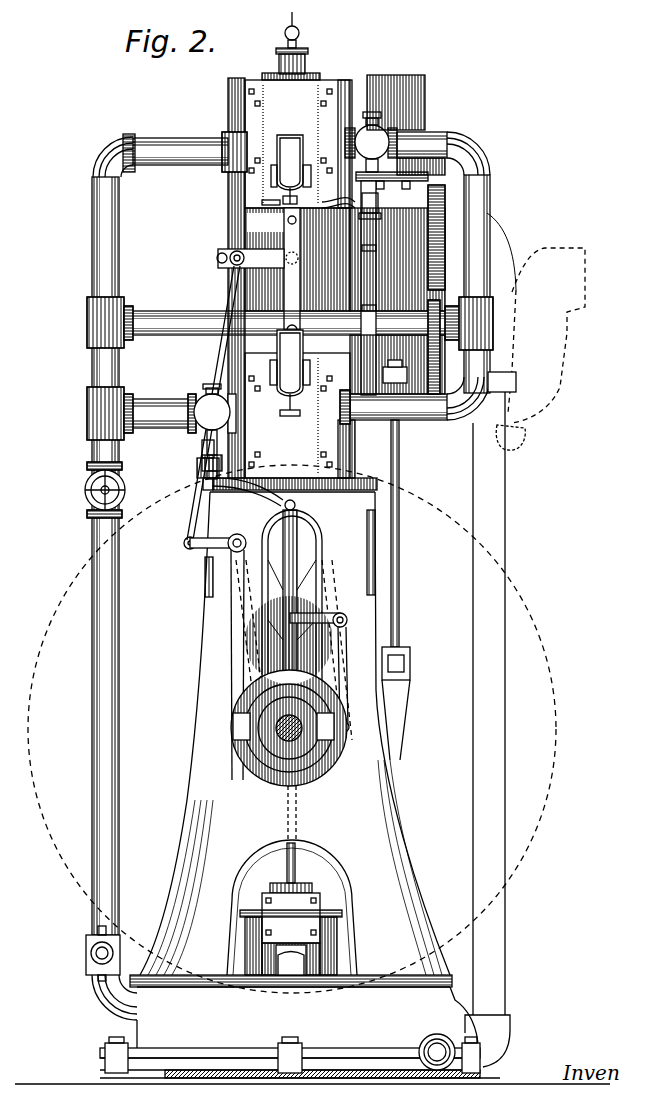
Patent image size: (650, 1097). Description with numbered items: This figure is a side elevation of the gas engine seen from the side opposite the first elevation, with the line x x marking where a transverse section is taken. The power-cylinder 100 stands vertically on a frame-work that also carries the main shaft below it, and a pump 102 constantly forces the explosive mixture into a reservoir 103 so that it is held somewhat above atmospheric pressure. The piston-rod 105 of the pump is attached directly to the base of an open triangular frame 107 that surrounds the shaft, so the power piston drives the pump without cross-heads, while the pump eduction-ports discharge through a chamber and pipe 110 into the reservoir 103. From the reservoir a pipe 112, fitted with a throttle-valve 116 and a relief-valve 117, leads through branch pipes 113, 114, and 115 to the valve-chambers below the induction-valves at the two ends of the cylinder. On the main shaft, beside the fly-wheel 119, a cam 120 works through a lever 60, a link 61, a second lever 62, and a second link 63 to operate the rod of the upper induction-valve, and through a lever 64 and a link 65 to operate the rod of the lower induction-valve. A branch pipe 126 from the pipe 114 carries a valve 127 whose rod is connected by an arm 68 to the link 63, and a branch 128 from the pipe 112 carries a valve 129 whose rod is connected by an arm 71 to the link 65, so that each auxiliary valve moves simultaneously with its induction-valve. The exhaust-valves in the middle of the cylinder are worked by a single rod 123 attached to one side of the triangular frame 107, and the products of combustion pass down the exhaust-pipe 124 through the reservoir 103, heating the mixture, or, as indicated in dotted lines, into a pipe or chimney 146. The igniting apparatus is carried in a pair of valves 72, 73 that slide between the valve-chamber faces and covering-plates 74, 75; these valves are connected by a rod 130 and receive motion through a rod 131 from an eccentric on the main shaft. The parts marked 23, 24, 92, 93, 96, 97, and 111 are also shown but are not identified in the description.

The cylinder 23 is at (436, 222).
The cylinder head 24 is at (440, 342).
The lever 60 is at (238, 597).
The link 61 is at (210, 350).
The second lever 62 is at (250, 258).
The second link 63 is at (282, 227).
The lever 64 is at (343, 697).
The link 65 is at (302, 569).
The arm 68 is at (345, 205).
The arm 71 is at (257, 494).
The valve 72 is at (291, 80).
The valve 73 is at (308, 481).
The covering-plate 74 is at (298, 144).
The covering-plate 75 is at (318, 416).
The upper valve 92 is at (291, 169).
The lower valve 93 is at (290, 373).
The valve stem pin 96 is at (268, 201).
The lower valve casing 97 is at (297, 415).
The power-cylinder 100 is at (228, 218).
The pump 102 is at (245, 950).
The reservoir 103 is at (300, 785).
The piston-rod of the pump 105 is at (296, 863).
The open triangular frame 107 is at (226, 643).
The chamber and pipe 110 is at (291, 913).
The pump plunger 111 is at (291, 959).
The pipe 112 is at (118, 673).
The branch pipe 113 is at (172, 146).
The branch pipe 114 is at (171, 317).
The branch pipe 115 is at (436, 418).
The throttle-valve 116 is at (85, 489).
The relief-valve 117 is at (87, 953).
The fly-wheel 119 is at (298, 729).
The cam 120 is at (318, 784).
The rod 123 is at (398, 540).
The exhaust-pipe 124 is at (490, 719).
The branch pipe 126 is at (489, 212).
The valve 127 is at (386, 150).
The branch 128 is at (158, 410).
The valve 129 is at (215, 431).
The rod 130 is at (299, 288).
The rod 131 is at (292, 640).
The pipe or chimney 146 is at (536, 331).
The section line x is at (299, 9).